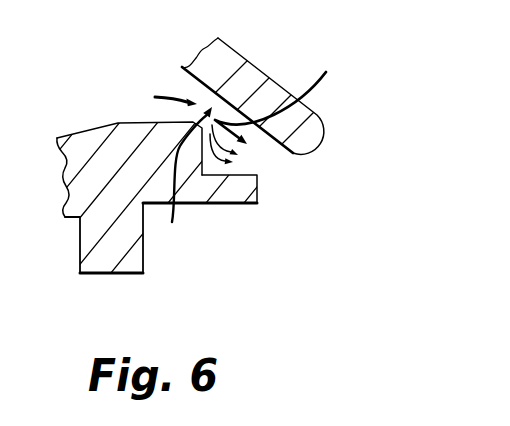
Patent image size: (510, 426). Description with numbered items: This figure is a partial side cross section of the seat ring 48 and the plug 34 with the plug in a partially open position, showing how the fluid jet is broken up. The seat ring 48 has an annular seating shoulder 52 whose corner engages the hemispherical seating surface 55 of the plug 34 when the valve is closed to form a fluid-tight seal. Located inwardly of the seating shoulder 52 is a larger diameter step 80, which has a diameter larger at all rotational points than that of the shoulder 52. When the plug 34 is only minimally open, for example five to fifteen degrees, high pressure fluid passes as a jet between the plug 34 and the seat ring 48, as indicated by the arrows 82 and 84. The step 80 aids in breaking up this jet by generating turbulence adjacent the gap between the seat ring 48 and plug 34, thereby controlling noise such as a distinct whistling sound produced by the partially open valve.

The plug 34 is at (262, 86).
The seat ring 48 is at (116, 285).
The annular seating shoulder 52 is at (125, 143).
The hemispherical seating surface 55 is at (187, 183).
The step 80 is at (220, 196).
The fluid jet arrow 82 is at (172, 92).
The fluid jet arrow 84 is at (287, 103).